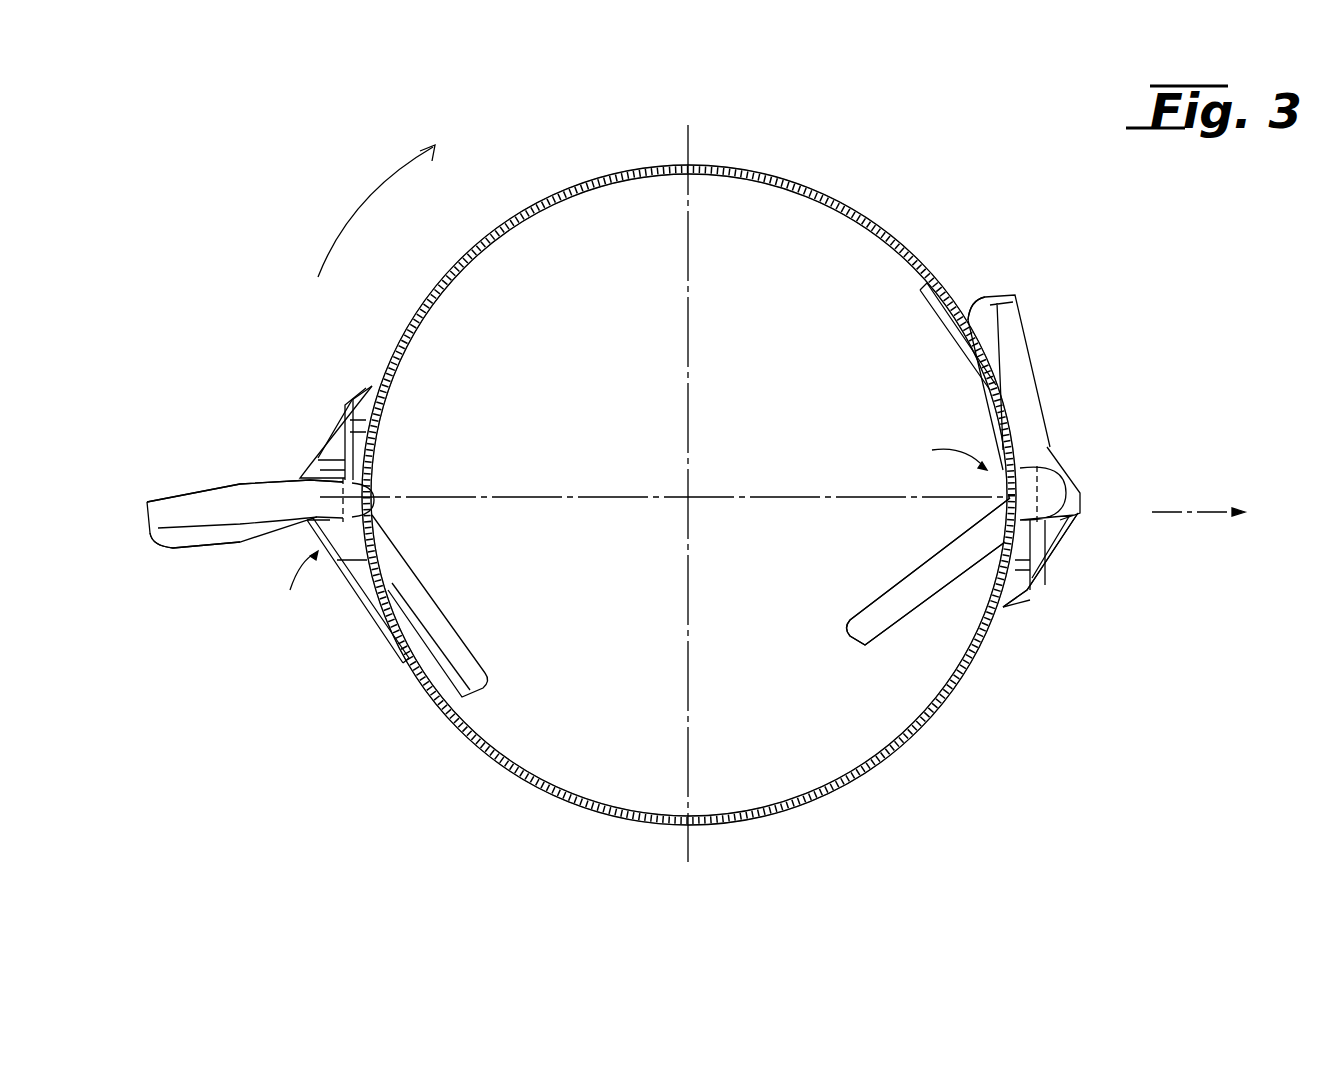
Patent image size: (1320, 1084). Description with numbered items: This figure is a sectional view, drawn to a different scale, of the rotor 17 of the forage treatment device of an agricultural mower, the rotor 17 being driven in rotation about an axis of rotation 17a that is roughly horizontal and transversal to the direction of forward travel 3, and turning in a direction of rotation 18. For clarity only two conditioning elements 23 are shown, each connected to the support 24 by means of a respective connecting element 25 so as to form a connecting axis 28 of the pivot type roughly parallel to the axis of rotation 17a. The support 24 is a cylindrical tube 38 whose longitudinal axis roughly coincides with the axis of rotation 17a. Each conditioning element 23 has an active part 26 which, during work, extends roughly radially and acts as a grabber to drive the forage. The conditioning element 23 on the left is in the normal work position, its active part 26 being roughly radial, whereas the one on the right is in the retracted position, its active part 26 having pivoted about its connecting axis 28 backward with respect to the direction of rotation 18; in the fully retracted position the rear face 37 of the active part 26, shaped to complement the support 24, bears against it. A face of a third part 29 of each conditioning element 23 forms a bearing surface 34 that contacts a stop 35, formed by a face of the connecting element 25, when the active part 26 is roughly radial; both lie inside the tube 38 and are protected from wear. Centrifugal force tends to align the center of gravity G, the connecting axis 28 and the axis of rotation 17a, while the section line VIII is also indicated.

The direction of forward travel 3 is at (1190, 515).
The rotor 17 is at (486, 802).
The axis of rotation 17a is at (690, 500).
The direction of rotation 18 is at (375, 198).
The conditioning element 23 is at (150, 604).
The support 24 is at (838, 807).
The connecting element 25 is at (336, 402).
The active part 26 is at (146, 483).
The connecting axis 28 is at (372, 492).
The third part 29 is at (505, 683).
The bearing surface 34 is at (910, 572).
The stop 35 is at (943, 327).
The rear face 37 is at (215, 537).
The cylindrical tube 38 is at (905, 760).
The center of gravity G is at (626, 526).
The section line VIII is at (248, 441).